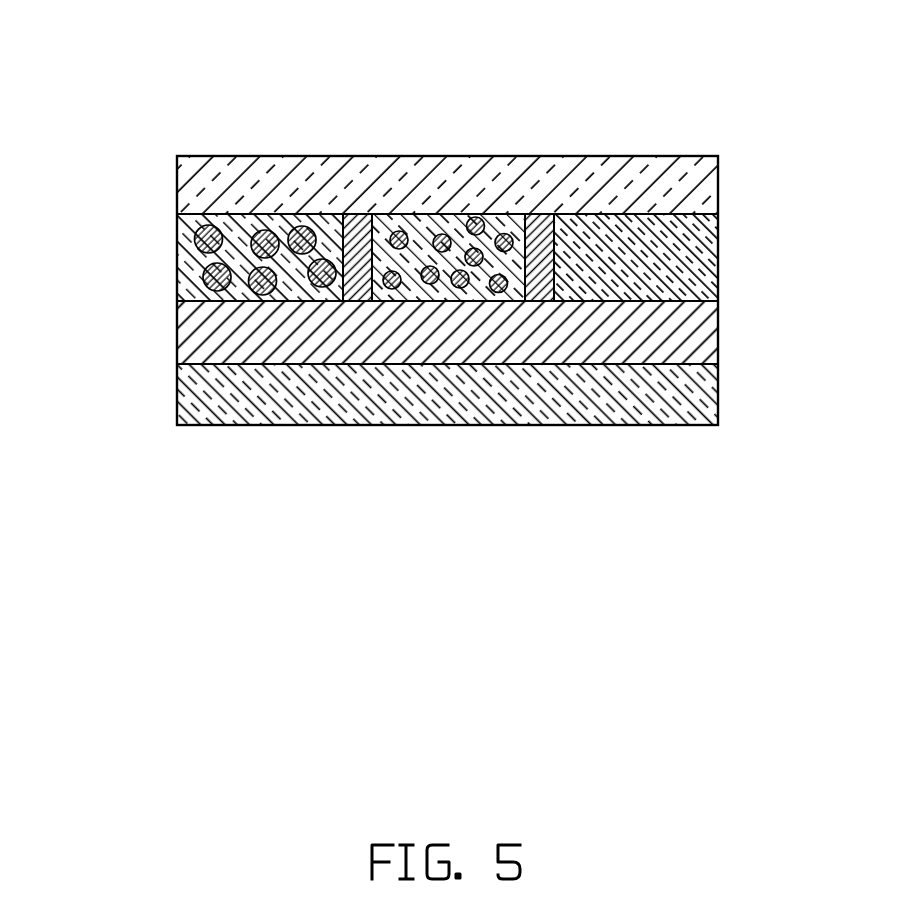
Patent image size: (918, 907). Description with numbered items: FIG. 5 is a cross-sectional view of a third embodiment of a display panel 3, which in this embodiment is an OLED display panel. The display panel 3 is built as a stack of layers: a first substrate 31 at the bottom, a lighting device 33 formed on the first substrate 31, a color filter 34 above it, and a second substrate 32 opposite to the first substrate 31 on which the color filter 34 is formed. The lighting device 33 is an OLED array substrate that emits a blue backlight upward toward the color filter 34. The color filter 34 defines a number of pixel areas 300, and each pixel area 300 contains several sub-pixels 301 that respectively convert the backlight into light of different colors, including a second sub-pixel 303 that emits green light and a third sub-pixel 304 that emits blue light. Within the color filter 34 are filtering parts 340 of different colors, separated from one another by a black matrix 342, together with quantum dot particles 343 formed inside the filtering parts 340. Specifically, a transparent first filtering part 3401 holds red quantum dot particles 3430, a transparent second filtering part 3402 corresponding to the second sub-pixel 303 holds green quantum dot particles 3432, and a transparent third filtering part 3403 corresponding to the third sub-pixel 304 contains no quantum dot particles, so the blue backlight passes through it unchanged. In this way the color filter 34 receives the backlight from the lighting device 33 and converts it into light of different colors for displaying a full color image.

The display panel 3 is at (132, 58).
The pixel area 300 is at (670, 88).
The sub-pixel 301 is at (358, 145).
The second sub-pixel 303 is at (540, 145).
The third sub-pixel 304 is at (723, 145).
The color filter 34 is at (86, 170).
The black matrix 342 is at (355, 232).
The filtering part 340 is at (193, 240).
The quantum dot particles 343 is at (213, 283).
The red quantum dot particles 3430 is at (248, 303).
The first filtering part 3401 is at (295, 292).
The second filtering part 3402 is at (412, 290).
The green quantum dot particles 3432 is at (502, 288).
The third filtering part 3403 is at (695, 274).
The second substrate 32 is at (693, 195).
The lighting device 33 is at (707, 343).
The first substrate 31 is at (198, 403).